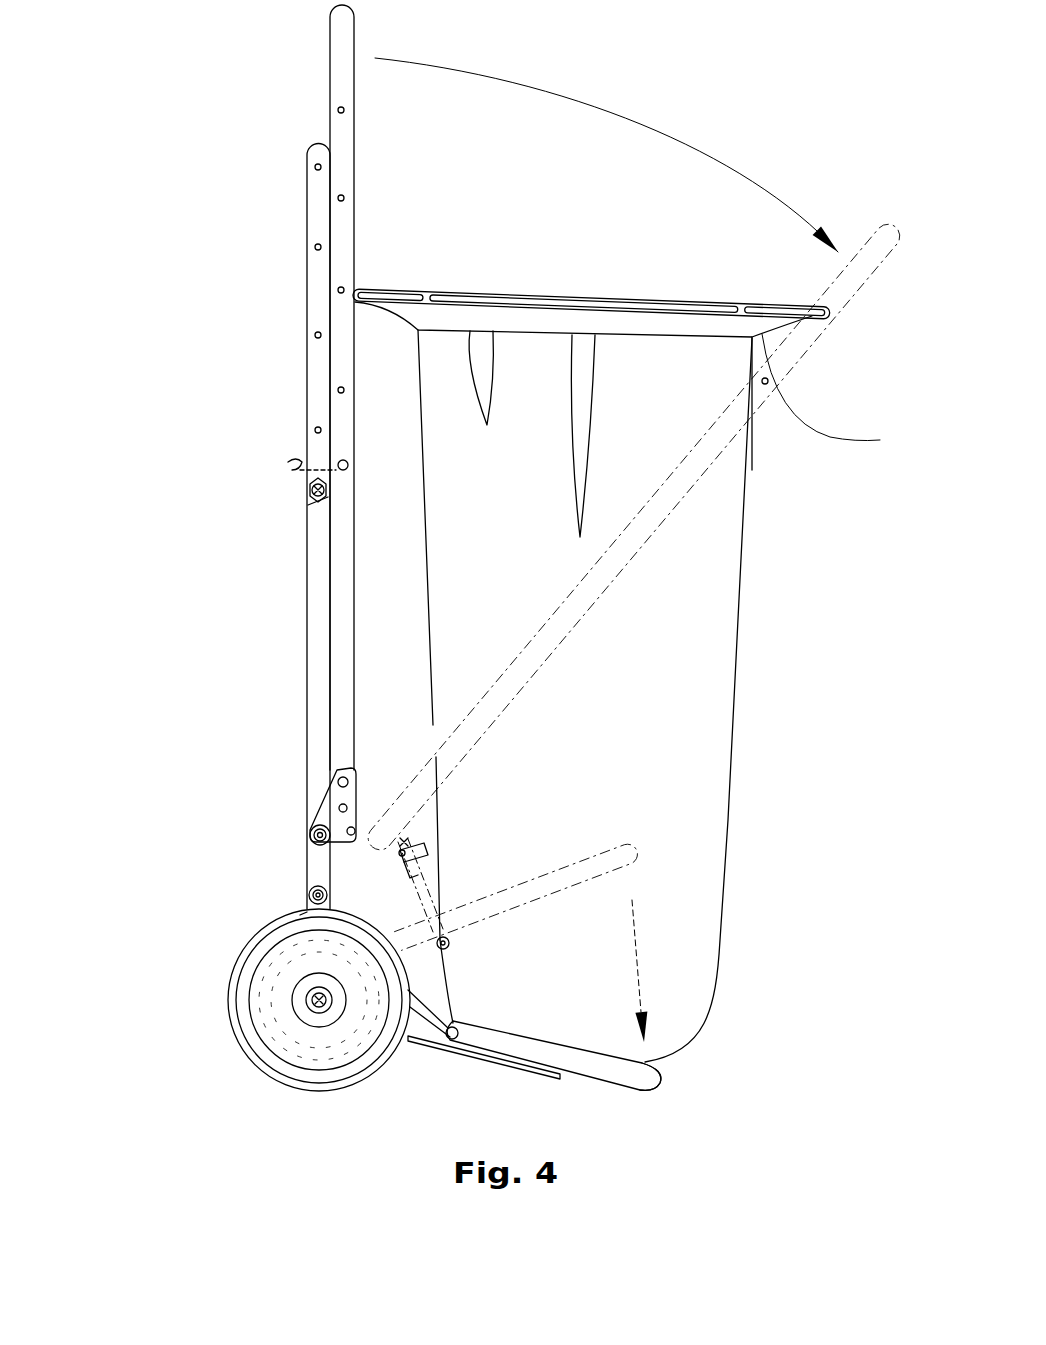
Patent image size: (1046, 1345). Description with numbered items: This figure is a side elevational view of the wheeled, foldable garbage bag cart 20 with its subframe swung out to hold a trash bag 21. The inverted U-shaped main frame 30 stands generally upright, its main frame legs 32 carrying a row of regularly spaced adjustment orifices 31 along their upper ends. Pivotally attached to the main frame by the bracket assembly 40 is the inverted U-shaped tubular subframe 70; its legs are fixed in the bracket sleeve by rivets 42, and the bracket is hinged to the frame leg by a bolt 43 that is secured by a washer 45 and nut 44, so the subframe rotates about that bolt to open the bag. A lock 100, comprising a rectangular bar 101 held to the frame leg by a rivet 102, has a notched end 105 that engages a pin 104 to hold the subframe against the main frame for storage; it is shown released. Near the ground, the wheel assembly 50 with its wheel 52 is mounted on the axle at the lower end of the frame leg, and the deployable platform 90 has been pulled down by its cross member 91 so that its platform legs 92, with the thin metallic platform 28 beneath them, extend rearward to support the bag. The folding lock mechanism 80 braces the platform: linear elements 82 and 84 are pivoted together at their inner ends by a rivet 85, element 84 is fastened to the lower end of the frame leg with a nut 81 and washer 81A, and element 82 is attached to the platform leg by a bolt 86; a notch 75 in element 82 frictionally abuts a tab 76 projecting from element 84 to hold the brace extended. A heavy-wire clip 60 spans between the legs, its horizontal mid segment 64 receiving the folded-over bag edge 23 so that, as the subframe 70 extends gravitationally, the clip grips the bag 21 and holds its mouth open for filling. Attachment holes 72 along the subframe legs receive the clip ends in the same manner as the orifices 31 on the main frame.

The cart 20 is at (728, 146).
The trash bag 21 is at (700, 672).
The bag edge 23 is at (660, 325).
The platform 28 is at (472, 1062).
The main frame 30 is at (299, 174).
The adjustment orifices 31 is at (315, 335).
The main frame legs 32 is at (316, 210).
The bracket assembly 40 is at (383, 745).
The rivets 42 is at (338, 782).
The bolt 43 is at (310, 835).
The nut 44 is at (346, 843).
The washer 45 is at (338, 808).
The wheel assembly 50 is at (182, 1025).
The wheels 52 is at (250, 1060).
The clip 60 is at (437, 257).
The mid segment 64 is at (832, 313).
The subframe 70 is at (362, 43).
The handle holes 72 is at (340, 300).
The notch 75 is at (430, 860).
The tab 76 is at (430, 843).
The folding lock mechanism 80 is at (432, 803).
The nut 81 is at (300, 915).
The washer 81A is at (310, 880).
The linear element 82 is at (425, 902).
The linear element 84 is at (438, 900).
The rivet 85 is at (425, 848).
The bolt 86 is at (450, 948).
The platform 90 is at (738, 1087).
The cross member 91 is at (690, 1098).
The platform legs 92 is at (585, 1072).
The lock 100 is at (250, 480).
The rectangular bar 101 is at (318, 462).
The rivet 102 is at (310, 505).
The pin 104 is at (345, 470).
The notched end 105 is at (290, 462).